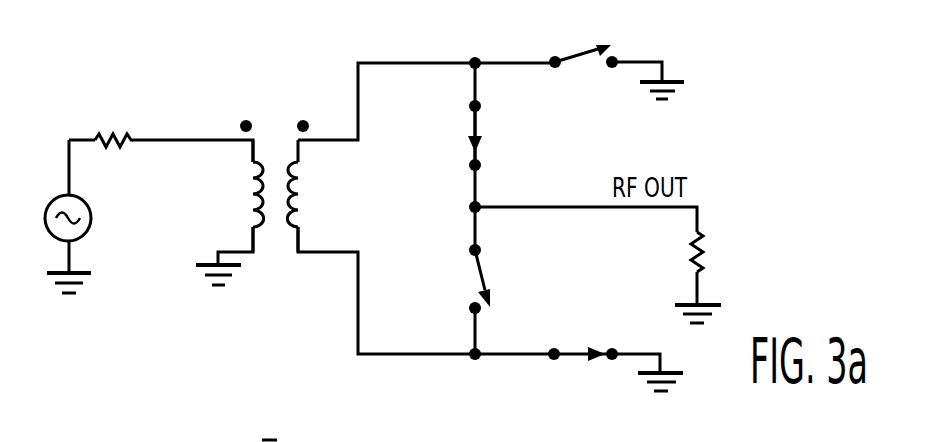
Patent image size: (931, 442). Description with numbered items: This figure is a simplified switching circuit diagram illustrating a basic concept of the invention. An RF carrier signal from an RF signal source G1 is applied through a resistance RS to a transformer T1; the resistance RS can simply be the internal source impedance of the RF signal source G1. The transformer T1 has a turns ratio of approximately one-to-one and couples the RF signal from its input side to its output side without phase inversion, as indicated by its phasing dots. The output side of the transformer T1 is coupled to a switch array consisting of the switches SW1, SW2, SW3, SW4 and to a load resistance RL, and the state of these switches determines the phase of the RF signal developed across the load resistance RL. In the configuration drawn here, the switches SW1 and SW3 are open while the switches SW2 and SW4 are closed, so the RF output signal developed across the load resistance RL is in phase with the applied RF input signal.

The RF signal source G1 is at (85, 218).
The resistance RS is at (103, 144).
The transformer T1 is at (288, 116).
The switch SW1 is at (581, 41).
The switch SW2 is at (448, 135).
The switch SW3 is at (455, 278).
The switch SW4 is at (583, 373).
The load resistance RL is at (725, 262).